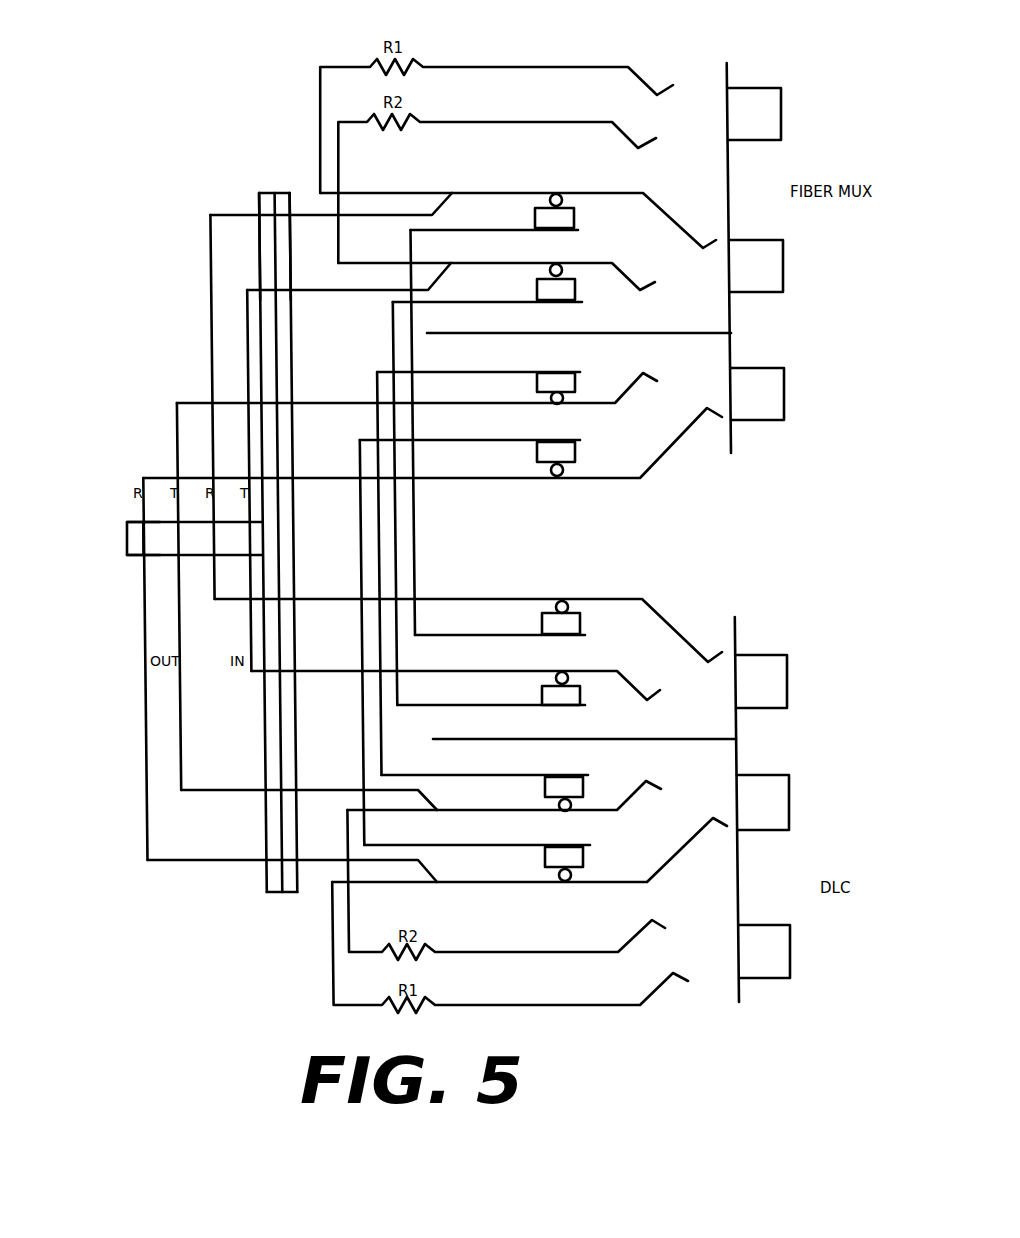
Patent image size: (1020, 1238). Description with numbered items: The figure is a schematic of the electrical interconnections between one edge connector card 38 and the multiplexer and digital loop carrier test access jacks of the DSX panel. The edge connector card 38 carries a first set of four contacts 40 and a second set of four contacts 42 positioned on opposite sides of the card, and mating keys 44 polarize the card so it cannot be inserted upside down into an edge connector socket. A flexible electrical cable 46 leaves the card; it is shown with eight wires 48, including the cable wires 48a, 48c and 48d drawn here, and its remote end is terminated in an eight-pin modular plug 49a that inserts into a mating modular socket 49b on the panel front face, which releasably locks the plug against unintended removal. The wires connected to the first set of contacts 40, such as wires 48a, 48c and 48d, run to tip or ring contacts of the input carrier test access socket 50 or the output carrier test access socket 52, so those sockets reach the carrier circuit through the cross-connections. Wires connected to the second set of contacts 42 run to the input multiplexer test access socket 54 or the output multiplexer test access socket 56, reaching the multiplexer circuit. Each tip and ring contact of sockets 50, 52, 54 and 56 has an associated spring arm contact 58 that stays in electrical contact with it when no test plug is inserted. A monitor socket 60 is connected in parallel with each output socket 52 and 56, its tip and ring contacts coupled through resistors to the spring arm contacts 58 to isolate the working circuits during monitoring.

The edge connector card 38 is at (127, 541).
The first set of four contacts 40 is at (127, 556).
The second set of four contacts 42 is at (127, 521).
The mating keys 44 is at (144, 520).
The flexible electrical cable 46 is at (232, 884).
The cable wires 48 is at (224, 795).
The cable wire 48a is at (146, 766).
The cable wire 48c is at (233, 598).
The cable wire 48d is at (250, 672).
The modular plug 49a is at (264, 196).
The modular socket 49b is at (280, 196).
The input carrier test access socket 50 is at (771, 697).
The output carrier test access socket 52 is at (773, 817).
The input multiplexer test access socket 54 is at (768, 410).
The output multiplexer test access socket 56 is at (767, 282).
The spring arm contact 58 is at (532, 231).
The monitor socket 60 is at (766, 129).